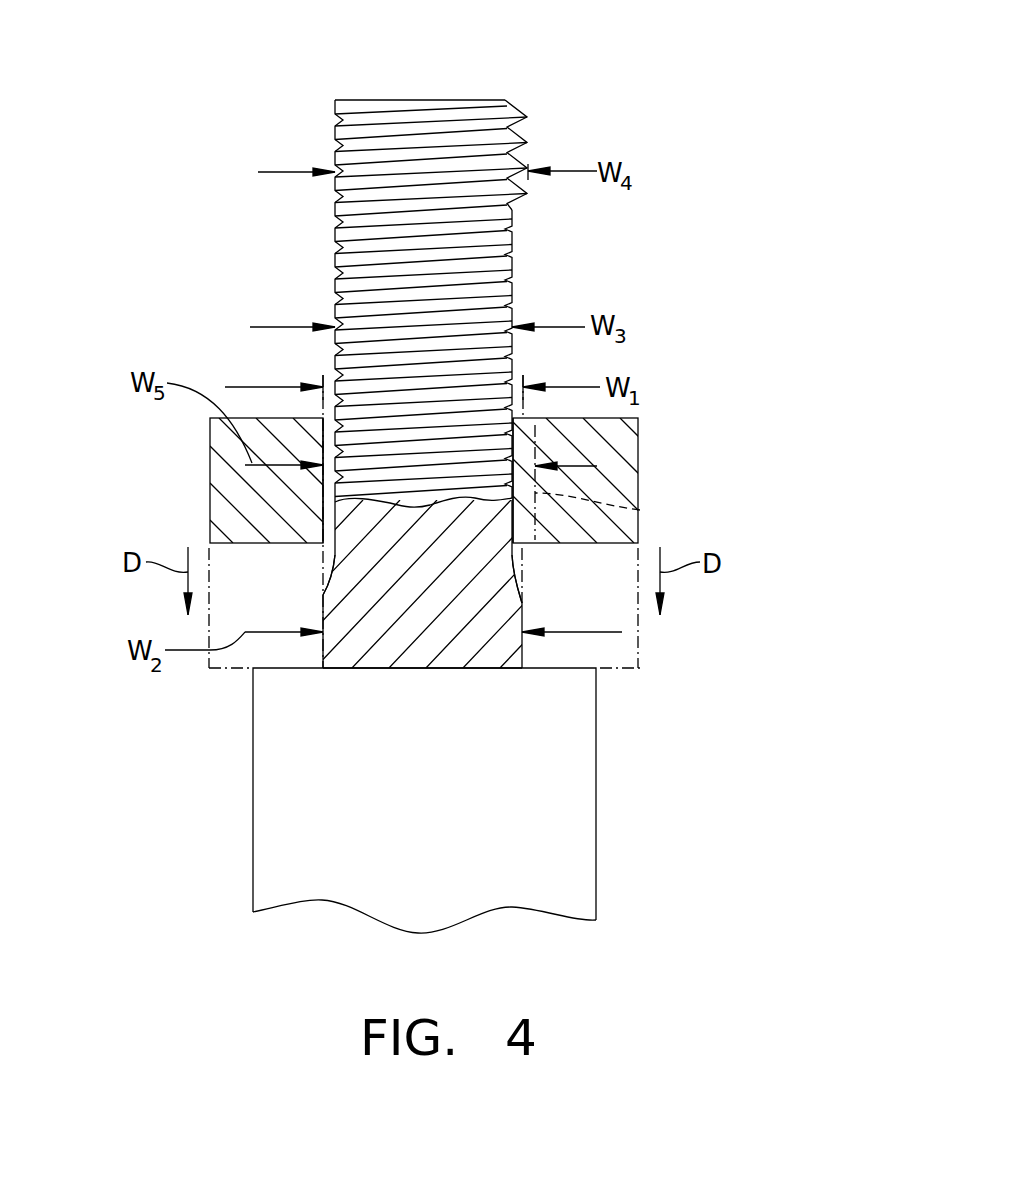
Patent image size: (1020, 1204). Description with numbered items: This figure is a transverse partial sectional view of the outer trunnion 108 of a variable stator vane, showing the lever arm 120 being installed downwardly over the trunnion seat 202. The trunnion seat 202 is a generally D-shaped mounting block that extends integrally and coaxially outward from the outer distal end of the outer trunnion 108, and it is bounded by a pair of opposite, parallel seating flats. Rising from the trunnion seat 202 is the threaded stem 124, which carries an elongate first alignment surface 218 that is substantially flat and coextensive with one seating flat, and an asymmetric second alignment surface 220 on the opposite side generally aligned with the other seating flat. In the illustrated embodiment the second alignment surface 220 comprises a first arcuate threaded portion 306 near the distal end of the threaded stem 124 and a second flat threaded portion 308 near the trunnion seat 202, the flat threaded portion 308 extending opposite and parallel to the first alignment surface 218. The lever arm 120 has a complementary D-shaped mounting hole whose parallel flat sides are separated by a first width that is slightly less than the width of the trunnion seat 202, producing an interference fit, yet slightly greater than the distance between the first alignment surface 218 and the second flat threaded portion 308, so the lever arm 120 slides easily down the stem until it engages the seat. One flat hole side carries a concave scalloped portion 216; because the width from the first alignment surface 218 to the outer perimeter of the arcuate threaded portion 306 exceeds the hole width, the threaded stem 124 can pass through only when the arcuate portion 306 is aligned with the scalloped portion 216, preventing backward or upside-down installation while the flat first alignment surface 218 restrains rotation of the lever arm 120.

The threaded stem 124 is at (437, 261).
The first arcuate threaded portion 306 is at (527, 142).
The second flat threaded portion 308 is at (512, 212).
The first alignment surface 218 is at (335, 310).
The second alignment surface 220 is at (557, 431).
The lever arm 120 is at (639, 483).
The scalloped portion 216 is at (640, 510).
The trunnion seat 202 is at (491, 672).
The outer trunnion 108 is at (527, 869).